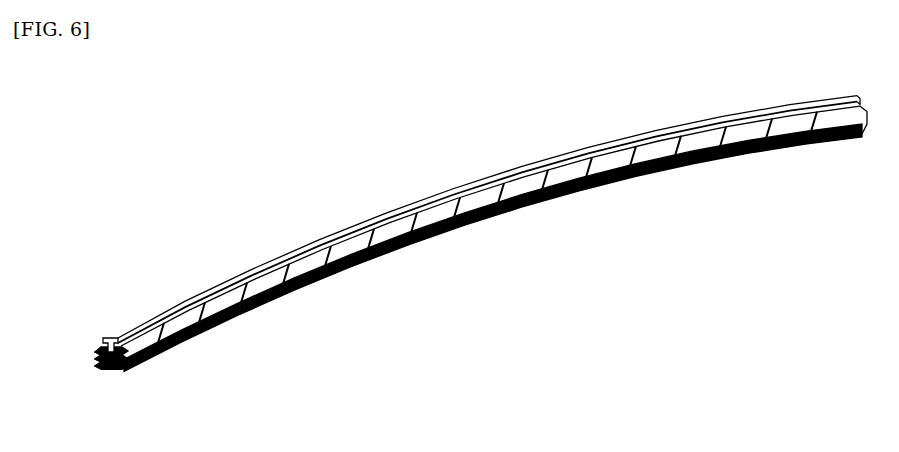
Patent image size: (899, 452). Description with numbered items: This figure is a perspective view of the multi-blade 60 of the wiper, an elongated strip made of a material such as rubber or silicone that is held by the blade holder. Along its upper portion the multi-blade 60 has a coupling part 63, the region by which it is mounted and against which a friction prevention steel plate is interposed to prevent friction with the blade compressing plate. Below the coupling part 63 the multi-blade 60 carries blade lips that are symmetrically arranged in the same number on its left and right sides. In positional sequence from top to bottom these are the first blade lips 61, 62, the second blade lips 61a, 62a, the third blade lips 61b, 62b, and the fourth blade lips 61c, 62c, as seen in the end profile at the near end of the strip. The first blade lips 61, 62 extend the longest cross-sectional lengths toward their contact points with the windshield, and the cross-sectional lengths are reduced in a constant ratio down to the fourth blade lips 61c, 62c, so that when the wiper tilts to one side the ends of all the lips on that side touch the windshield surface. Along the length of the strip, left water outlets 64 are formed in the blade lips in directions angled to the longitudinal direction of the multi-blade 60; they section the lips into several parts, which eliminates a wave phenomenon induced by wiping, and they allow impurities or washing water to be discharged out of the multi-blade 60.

The multi-blade 60 is at (531, 156).
The first blade lip 61 is at (99, 349).
The second blade lip 61a is at (96, 356).
The third blade lip 61b is at (97, 363).
The fourth blade lip 61c is at (101, 370).
The first blade lip 62 is at (128, 362).
The second blade lip 62a is at (128, 366).
The third blade lip 62b is at (124, 372).
The fourth blade lip 62c is at (115, 373).
The coupling part 63 is at (296, 248).
The left water outlets 64 is at (545, 194).